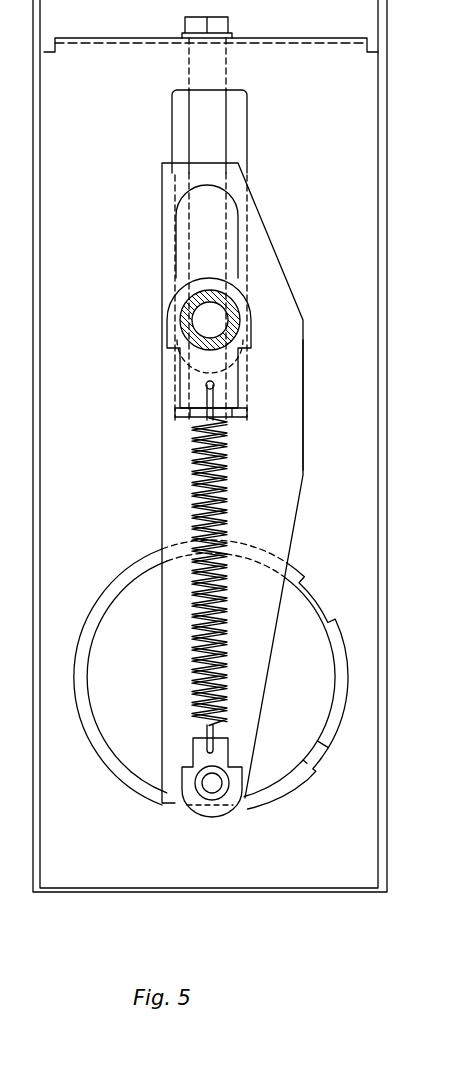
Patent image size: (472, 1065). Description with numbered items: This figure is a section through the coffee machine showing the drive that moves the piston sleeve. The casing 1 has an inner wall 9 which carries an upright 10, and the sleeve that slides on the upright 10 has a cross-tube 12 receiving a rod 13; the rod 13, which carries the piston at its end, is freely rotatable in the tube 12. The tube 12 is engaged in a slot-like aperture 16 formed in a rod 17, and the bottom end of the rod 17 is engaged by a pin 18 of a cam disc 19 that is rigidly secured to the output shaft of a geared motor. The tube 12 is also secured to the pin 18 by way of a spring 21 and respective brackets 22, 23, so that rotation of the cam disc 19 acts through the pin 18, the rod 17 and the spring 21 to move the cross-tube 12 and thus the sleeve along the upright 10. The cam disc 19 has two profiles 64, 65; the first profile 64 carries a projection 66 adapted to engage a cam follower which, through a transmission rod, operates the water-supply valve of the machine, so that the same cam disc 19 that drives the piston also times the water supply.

The casing 1 is at (383, 468).
The inner wall 9 is at (358, 97).
The upright 10 is at (213, 140).
The cross-tube 12 is at (183, 350).
The rod 13 is at (198, 320).
The slot-like aperture 16 is at (183, 233).
The rod 17 is at (287, 440).
The pin 18 is at (212, 790).
The cam disc 19 is at (122, 760).
The spring 21 is at (230, 514).
The bracket 22 is at (190, 782).
The bracket 23 is at (248, 340).
The first profile 64 is at (267, 792).
The second profile 65 is at (97, 601).
The projection 66 is at (307, 763).